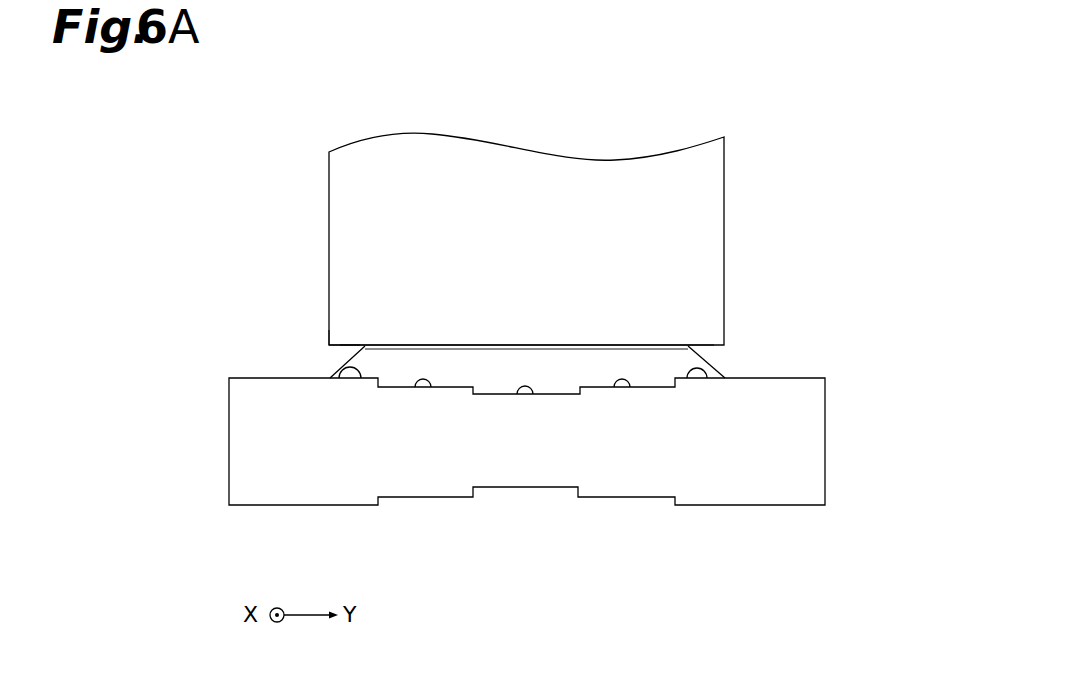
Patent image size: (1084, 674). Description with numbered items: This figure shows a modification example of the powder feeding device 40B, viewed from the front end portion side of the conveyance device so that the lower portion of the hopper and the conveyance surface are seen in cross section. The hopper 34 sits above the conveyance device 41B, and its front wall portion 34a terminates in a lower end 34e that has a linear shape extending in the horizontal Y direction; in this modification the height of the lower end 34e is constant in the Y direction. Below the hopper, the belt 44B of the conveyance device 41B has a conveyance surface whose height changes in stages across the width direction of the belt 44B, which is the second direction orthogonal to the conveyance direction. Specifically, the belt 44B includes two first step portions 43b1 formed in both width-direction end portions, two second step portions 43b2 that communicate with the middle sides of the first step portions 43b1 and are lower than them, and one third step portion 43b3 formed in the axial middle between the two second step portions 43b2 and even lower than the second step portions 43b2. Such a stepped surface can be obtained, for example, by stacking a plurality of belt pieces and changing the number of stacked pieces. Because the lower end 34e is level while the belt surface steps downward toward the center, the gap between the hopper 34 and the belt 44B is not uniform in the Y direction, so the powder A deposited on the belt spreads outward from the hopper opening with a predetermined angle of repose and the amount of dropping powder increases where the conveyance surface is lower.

The powder feeding device 40B is at (743, 118).
The hopper 34 is at (738, 203).
The front wall portion 34a is at (637, 323).
The lower end 34e is at (440, 347).
The conveyance device 41B is at (840, 435).
The first step portions 43b1 is at (368, 347).
The second step portions 43b2 is at (424, 388).
The third step portion 43b3 is at (526, 395).
The belt 44B is at (808, 377).
The powder A is at (675, 360).